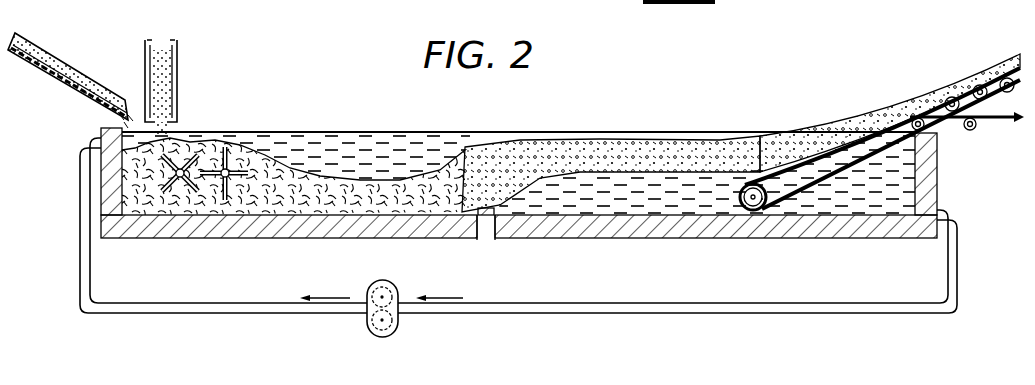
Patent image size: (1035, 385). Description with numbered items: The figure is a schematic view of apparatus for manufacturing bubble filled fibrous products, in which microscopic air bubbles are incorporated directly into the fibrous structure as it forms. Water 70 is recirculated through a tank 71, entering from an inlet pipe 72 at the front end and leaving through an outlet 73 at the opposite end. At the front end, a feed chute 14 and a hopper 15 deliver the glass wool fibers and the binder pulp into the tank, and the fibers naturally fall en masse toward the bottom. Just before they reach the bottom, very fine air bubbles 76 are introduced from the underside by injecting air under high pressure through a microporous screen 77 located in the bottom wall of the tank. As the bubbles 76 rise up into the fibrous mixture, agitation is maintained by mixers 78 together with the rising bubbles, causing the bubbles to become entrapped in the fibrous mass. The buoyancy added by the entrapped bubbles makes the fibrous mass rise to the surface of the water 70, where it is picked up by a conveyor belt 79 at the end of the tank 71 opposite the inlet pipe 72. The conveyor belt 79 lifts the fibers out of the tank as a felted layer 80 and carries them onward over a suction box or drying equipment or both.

The feed chute 14 is at (47, 66).
The hopper 15 is at (163, 78).
The water 70 is at (368, 132).
The tank 71 is at (726, 228).
The inlet pipe 72 is at (90, 132).
The outlet 73 is at (945, 210).
The air bubbles 76 is at (583, 135).
The microporous screen 77 is at (490, 240).
The mixers 78 is at (180, 205).
The conveyor belt 79 is at (838, 178).
The felted layer 80 is at (903, 104).